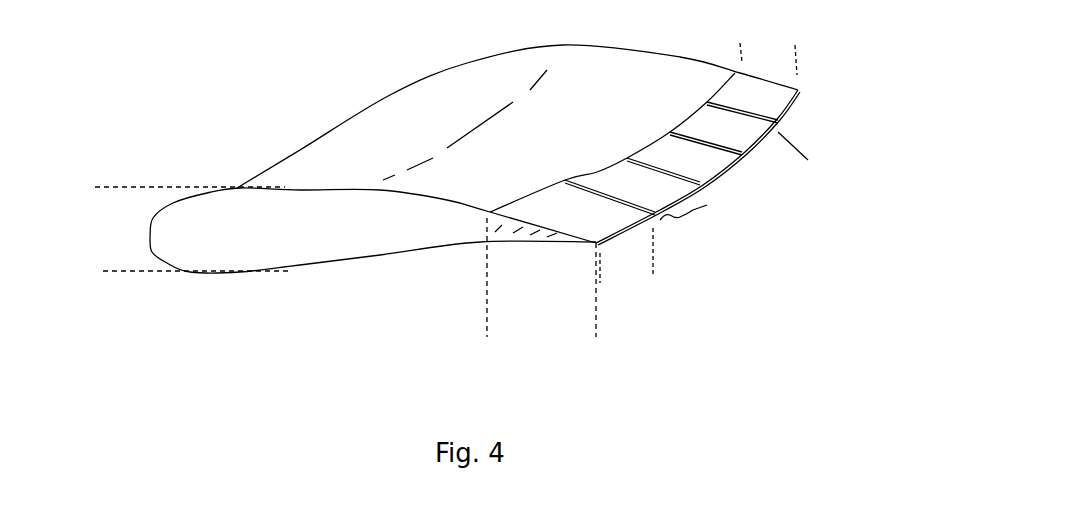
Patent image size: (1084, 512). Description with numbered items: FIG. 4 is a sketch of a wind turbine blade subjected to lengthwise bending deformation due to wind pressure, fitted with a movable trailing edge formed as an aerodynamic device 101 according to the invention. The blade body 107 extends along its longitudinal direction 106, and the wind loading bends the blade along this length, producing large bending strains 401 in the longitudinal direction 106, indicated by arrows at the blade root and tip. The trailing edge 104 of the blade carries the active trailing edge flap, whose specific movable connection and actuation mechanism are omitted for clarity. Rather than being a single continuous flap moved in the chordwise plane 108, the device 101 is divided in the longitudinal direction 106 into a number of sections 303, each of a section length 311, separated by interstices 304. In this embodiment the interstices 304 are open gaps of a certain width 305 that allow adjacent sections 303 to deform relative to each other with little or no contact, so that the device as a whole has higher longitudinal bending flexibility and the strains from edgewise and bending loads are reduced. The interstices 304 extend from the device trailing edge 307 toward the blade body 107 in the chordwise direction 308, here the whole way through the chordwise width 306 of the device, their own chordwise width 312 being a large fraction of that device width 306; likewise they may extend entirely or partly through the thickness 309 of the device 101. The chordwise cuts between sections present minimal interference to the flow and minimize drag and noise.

The aerodynamic device 101 is at (513, 235).
The trailing edge 104 is at (745, 167).
The longitudinal direction 106 is at (390, 87).
The blade body 107 is at (473, 123).
The chordwise plane 108 is at (317, 248).
The device sections 303 is at (600, 215).
The interstices 304 is at (697, 182).
The interstice width 305 is at (802, 137).
The chordwise width of the device 306 is at (593, 322).
The device trailing edge 307 is at (778, 117).
The chordwise direction 308 is at (468, 300).
The thickness of the device 309 is at (131, 190).
The section length 311 is at (648, 258).
The chordwise width of the interstices 312 is at (795, 63).
The bending strains 401 is at (823, 51).